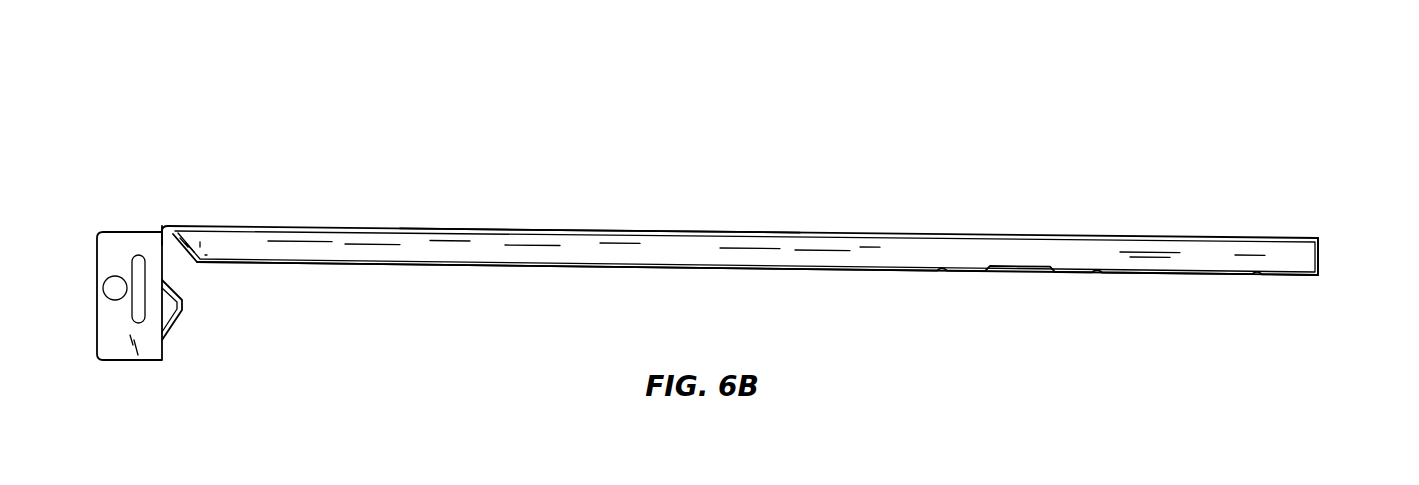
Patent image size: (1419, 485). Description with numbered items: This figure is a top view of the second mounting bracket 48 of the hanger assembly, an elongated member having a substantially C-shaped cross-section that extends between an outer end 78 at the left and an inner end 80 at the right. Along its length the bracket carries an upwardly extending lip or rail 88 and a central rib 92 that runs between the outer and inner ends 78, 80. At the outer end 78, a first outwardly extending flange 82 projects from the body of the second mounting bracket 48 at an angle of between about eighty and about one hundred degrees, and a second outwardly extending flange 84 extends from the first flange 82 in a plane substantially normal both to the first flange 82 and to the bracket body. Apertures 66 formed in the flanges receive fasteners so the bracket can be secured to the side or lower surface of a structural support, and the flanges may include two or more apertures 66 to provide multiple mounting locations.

The second mounting bracket 48 is at (873, 110).
The outer end 78 is at (192, 228).
The inner end 80 is at (1302, 238).
The upwardly extending lip or rail 88 is at (567, 225).
The central rib 92 is at (532, 255).
The second outwardly extending flange 84 is at (118, 258).
The apertures 66 is at (112, 300).
The first outwardly extending flange 82 is at (163, 358).